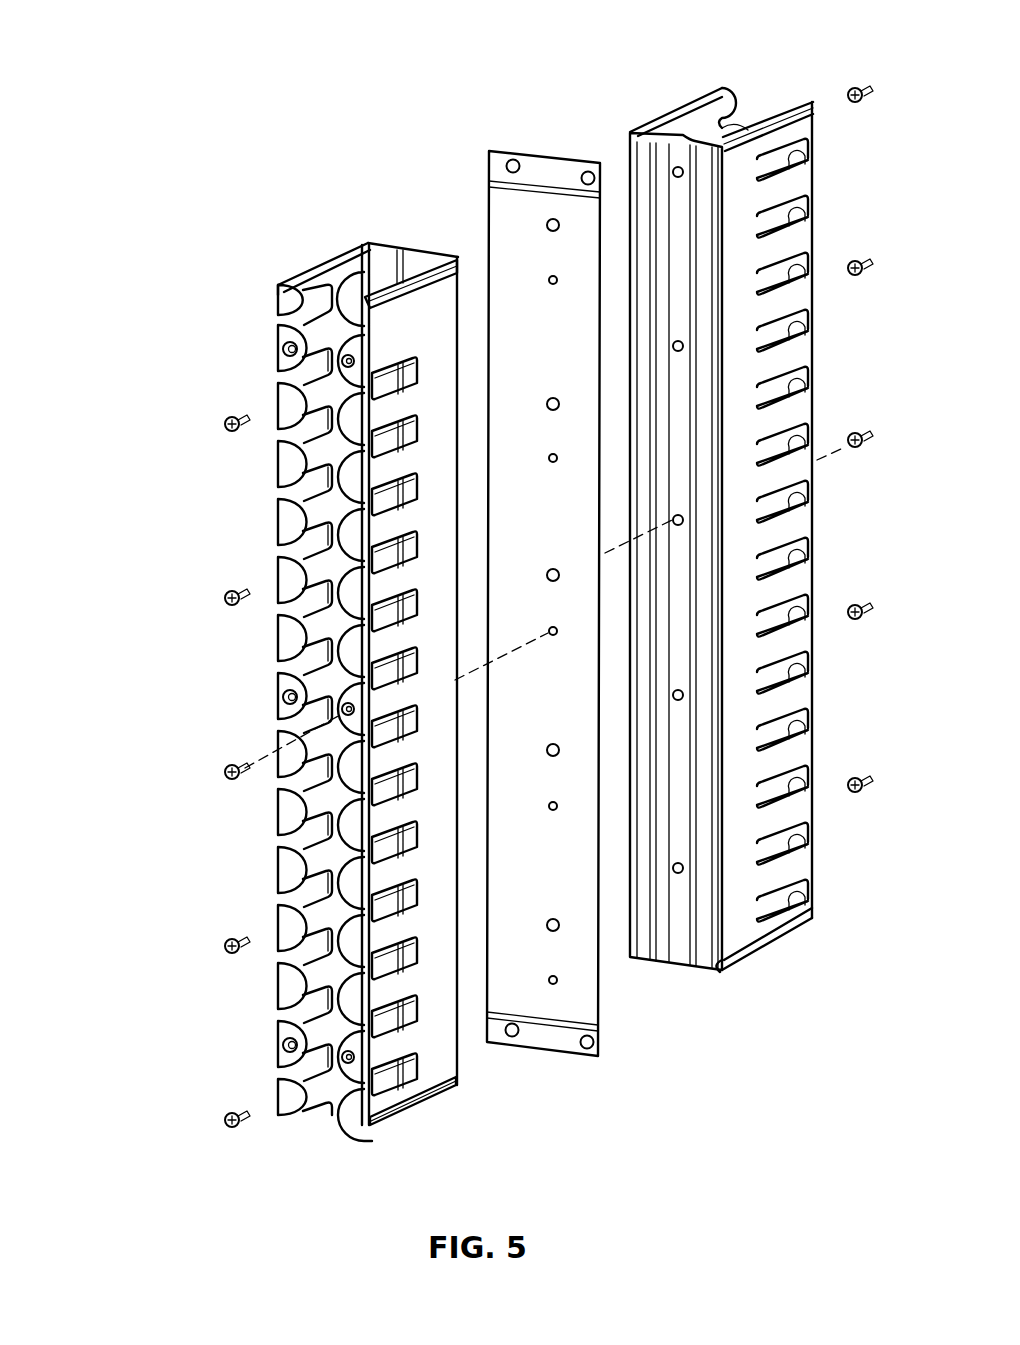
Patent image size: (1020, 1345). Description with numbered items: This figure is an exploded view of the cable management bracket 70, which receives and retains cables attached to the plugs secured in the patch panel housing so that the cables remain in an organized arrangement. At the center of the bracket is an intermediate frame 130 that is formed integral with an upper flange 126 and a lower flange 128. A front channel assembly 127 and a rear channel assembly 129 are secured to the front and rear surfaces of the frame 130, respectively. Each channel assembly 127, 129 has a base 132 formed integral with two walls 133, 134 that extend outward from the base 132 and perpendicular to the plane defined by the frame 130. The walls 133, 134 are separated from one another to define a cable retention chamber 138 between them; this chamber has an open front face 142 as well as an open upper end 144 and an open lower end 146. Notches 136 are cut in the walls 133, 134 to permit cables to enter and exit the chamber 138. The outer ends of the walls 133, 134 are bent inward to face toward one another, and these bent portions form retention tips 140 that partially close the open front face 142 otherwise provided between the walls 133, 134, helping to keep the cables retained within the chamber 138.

The cable management bracket 70 is at (150, 646).
The front channel assembly 127 is at (413, 147).
The intermediate frame 130 is at (578, 110).
The rear channel assembly 129 is at (807, 70).
The upper flange 126 is at (556, 172).
The lower flange 128 is at (556, 1045).
The base 132 is at (400, 262).
The wall 133 is at (306, 280).
The wall 134 is at (448, 300).
The notch 136 is at (276, 322).
The cable retention chamber 138 is at (286, 694).
The retention tip 140 is at (283, 405).
The open front face 142 is at (314, 578).
The open upper end 144 is at (358, 282).
The open lower end 146 is at (313, 1122).